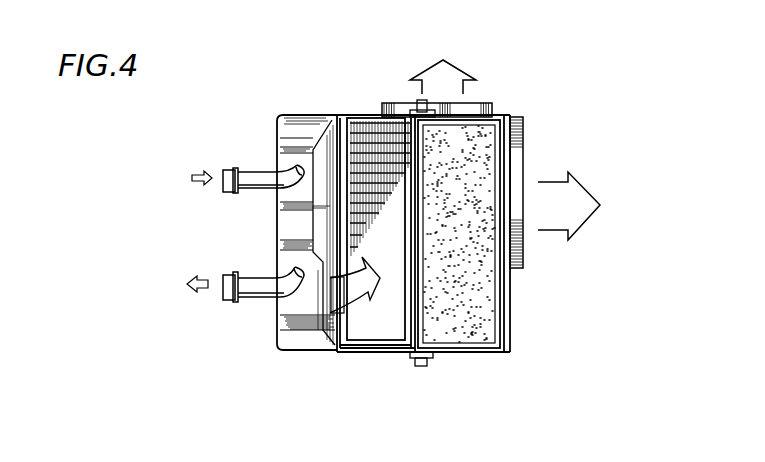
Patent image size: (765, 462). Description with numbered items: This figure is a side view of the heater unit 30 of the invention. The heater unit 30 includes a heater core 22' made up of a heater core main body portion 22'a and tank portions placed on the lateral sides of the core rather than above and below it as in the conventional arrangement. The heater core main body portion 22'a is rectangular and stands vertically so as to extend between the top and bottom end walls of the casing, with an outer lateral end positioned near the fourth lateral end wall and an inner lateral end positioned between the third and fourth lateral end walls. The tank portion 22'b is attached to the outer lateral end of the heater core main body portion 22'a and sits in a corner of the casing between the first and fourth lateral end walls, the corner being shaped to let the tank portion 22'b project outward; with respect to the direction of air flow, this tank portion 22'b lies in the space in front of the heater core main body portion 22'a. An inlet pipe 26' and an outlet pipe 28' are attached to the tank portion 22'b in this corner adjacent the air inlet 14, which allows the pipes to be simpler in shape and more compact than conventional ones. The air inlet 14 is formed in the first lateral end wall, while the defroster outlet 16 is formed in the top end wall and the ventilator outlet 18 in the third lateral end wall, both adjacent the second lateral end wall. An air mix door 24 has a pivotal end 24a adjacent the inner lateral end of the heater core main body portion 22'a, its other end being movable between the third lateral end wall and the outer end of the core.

The heater unit 30 is at (538, 77).
The heater core 22' is at (361, 272).
The heater core main body portion 22'a is at (370, 256).
The tank portion 22'b is at (299, 255).
The inlet pipe 26' is at (248, 159).
The outlet pipe 28' is at (245, 266).
The air mix door 24 is at (464, 332).
The pivotal end 24a is at (418, 109).
The defroster outlet 16 is at (478, 108).
The ventilator outlet 18 is at (525, 148).
The air inlet 14 is at (495, 296).